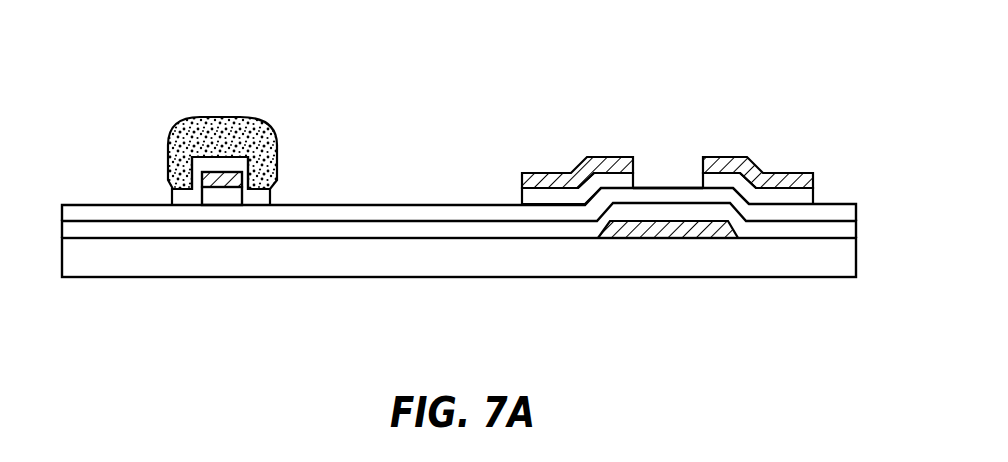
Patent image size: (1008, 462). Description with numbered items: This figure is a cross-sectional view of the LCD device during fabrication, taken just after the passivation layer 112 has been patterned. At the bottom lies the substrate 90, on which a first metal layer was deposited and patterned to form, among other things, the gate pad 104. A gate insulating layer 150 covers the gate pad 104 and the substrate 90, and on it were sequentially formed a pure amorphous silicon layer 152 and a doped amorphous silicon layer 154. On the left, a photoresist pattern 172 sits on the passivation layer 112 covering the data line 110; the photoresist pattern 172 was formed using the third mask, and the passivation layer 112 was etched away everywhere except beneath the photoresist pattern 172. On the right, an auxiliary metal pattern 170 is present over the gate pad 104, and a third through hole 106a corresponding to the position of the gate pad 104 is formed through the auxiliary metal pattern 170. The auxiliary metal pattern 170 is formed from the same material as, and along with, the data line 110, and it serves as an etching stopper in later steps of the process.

The substrate 90 is at (802, 262).
The gate pad 104 is at (668, 238).
The third through hole 106a is at (665, 158).
The data line 110 is at (214, 188).
The passivation layer 112 is at (263, 195).
The gate insulating layer 150 is at (390, 228).
The pure amorphous silicon layer 152 is at (453, 208).
The doped amorphous silicon layer 154 is at (543, 197).
The auxiliary metal pattern 170 is at (617, 155).
The photoresist pattern 172 is at (258, 127).